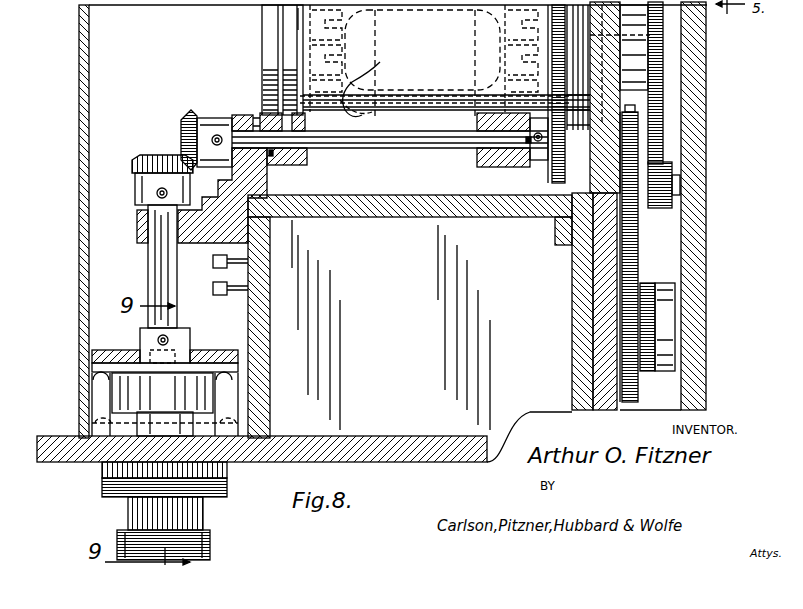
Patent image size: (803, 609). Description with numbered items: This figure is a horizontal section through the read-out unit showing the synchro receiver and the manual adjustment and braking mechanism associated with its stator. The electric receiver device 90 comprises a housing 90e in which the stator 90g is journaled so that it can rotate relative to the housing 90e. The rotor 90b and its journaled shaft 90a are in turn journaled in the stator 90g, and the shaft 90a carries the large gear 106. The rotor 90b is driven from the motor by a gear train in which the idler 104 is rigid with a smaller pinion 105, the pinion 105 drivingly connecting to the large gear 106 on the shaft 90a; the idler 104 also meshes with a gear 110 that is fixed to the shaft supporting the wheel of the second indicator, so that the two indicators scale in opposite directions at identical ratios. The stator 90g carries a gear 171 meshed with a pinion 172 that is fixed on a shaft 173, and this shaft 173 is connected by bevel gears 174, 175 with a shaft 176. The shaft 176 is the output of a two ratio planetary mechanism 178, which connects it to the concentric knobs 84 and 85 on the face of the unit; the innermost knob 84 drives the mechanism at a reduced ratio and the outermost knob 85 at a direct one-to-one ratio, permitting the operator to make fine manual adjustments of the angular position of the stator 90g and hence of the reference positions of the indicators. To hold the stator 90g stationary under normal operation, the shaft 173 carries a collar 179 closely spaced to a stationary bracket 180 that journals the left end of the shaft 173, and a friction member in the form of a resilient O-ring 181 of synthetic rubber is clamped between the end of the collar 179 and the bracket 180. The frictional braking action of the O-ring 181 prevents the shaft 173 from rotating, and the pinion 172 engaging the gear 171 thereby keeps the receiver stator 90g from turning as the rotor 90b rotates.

The electric receiver device 90 is at (245, 51).
The journaled shaft 90a is at (650, 50).
The rotor 90b is at (378, 20).
The housing 90e is at (305, 18).
The stator 90g is at (372, 75).
The gear 171 is at (556, 82).
The pinion 172 is at (548, 172).
The shaft 173 is at (380, 145).
The bevel gear 174 is at (186, 118).
The bevel gear 175 is at (155, 158).
The shaft 176 is at (158, 270).
The two ratio planetary mechanism 178 is at (108, 398).
The collar 179 is at (305, 158).
The stationary bracket 180 is at (255, 115).
The resilient O-ring 181 is at (278, 165).
The idler 104 is at (632, 243).
The pinion 105 is at (668, 208).
The large gear 106 is at (660, 112).
The gear 110 is at (658, 275).
The innermost knob 84 is at (215, 541).
The outermost knob 85 is at (222, 488).